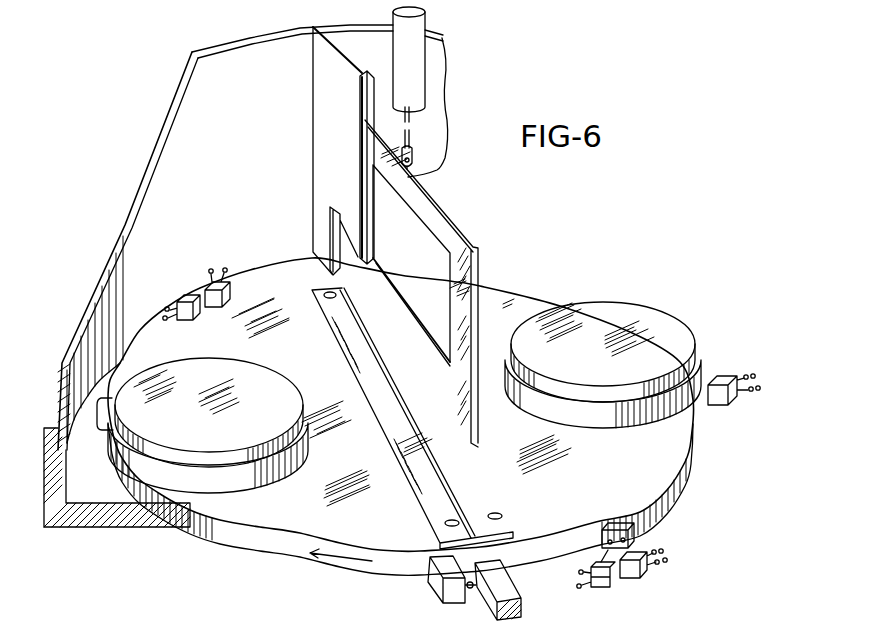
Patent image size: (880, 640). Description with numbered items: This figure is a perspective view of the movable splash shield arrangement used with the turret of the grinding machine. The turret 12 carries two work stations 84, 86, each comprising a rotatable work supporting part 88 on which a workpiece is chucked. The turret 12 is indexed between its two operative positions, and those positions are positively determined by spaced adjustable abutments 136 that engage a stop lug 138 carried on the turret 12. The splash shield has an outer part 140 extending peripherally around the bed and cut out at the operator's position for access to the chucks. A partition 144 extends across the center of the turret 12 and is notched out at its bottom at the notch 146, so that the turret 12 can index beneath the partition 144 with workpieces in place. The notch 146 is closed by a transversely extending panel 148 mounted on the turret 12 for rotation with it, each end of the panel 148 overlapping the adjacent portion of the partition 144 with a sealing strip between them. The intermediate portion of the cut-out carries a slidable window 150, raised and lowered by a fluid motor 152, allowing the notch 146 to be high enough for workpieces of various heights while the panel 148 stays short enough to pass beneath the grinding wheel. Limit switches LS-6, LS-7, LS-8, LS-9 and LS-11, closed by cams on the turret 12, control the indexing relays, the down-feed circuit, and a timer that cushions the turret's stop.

The turret 12 is at (302, 527).
The work station 84 is at (228, 482).
The work station 86 is at (625, 422).
The rotatable work supporting part 88 is at (675, 330).
The adjustable abutments 136 is at (479, 588).
The stop lug 138 is at (447, 592).
The outer part of splash shield 140 is at (218, 49).
The partition 144 is at (386, 51).
The notch 146 is at (330, 222).
The panel 148 is at (432, 428).
The slidable window 150 is at (422, 193).
The fluid motor 152 is at (412, 62).
The limit switch LS-6 is at (603, 586).
The limit switch LS-7 is at (180, 296).
The limit switch LS-8 is at (205, 288).
The limit switch LS-9 is at (637, 579).
The limit switch LS-11 is at (718, 405).